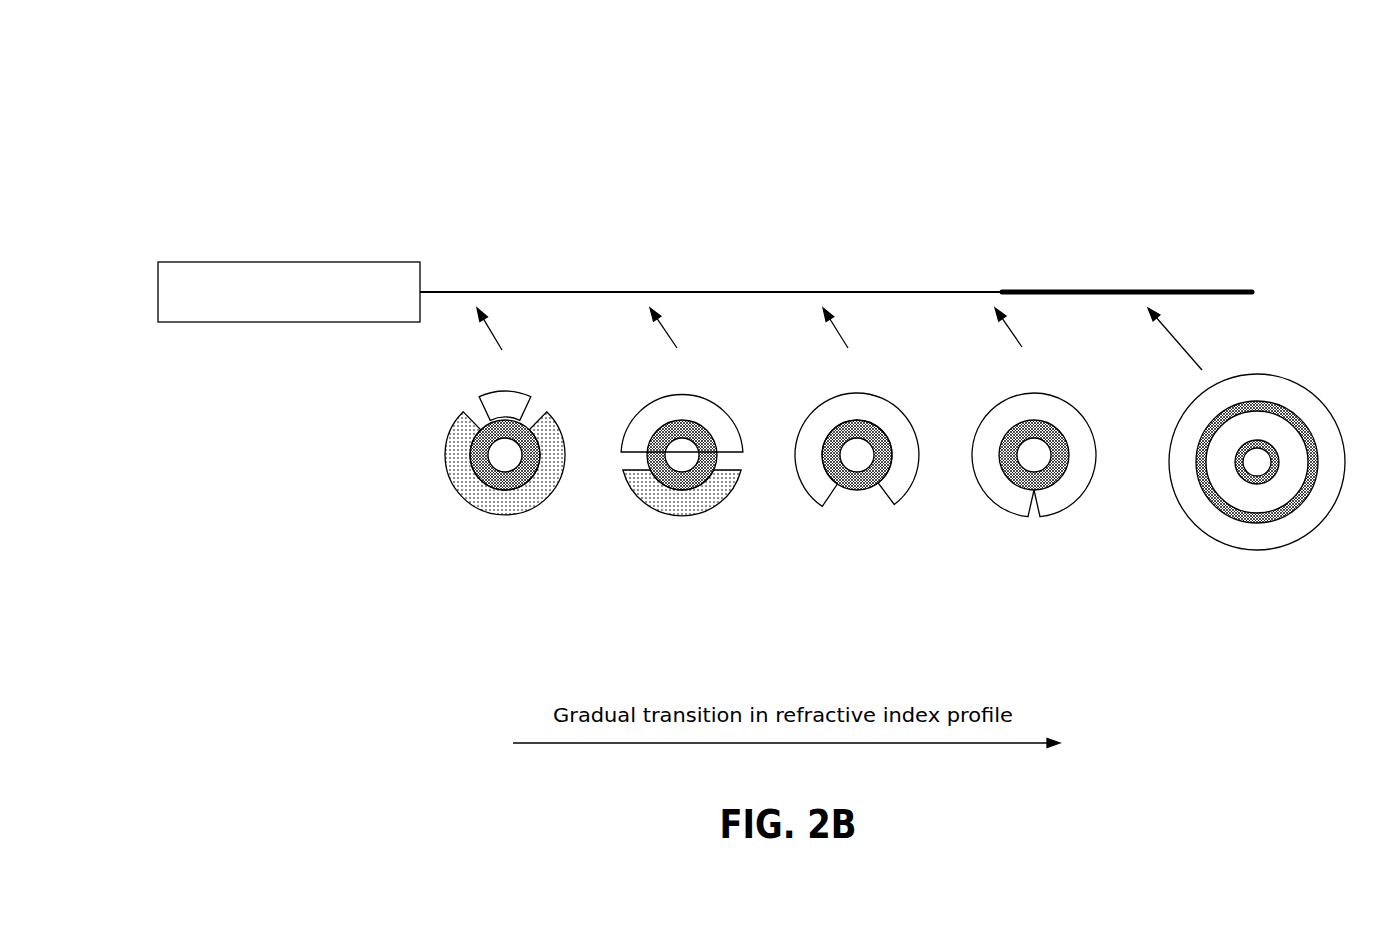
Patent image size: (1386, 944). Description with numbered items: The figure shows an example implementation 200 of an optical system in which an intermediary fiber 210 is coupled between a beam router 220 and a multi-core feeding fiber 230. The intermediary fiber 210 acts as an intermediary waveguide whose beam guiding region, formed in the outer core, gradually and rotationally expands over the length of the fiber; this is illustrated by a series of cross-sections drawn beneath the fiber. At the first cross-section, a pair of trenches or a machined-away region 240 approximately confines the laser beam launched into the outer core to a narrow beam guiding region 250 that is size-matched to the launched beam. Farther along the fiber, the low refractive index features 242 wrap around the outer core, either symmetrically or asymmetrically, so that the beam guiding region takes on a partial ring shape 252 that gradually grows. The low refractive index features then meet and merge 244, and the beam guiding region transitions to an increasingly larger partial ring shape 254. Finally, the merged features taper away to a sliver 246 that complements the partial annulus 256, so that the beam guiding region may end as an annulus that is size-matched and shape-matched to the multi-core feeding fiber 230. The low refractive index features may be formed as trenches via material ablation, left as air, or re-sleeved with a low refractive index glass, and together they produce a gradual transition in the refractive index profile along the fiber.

The example implementation 200 is at (305, 87).
The beam router 220 is at (281, 262).
The intermediary fiber 210 is at (736, 291).
The multi-core feeding fiber 230 is at (1124, 290).
The narrow beam guiding region 250 is at (514, 466).
The partial ring shape 252 is at (694, 496).
The larger partial ring shape 254 is at (866, 489).
The annulus 256 is at (1037, 496).
The pair of trenches 240 is at (528, 437).
The wrapping low refractive index features 242 is at (642, 480).
The merged low refractive index features 244 is at (857, 502).
The sliver 246 is at (1034, 517).